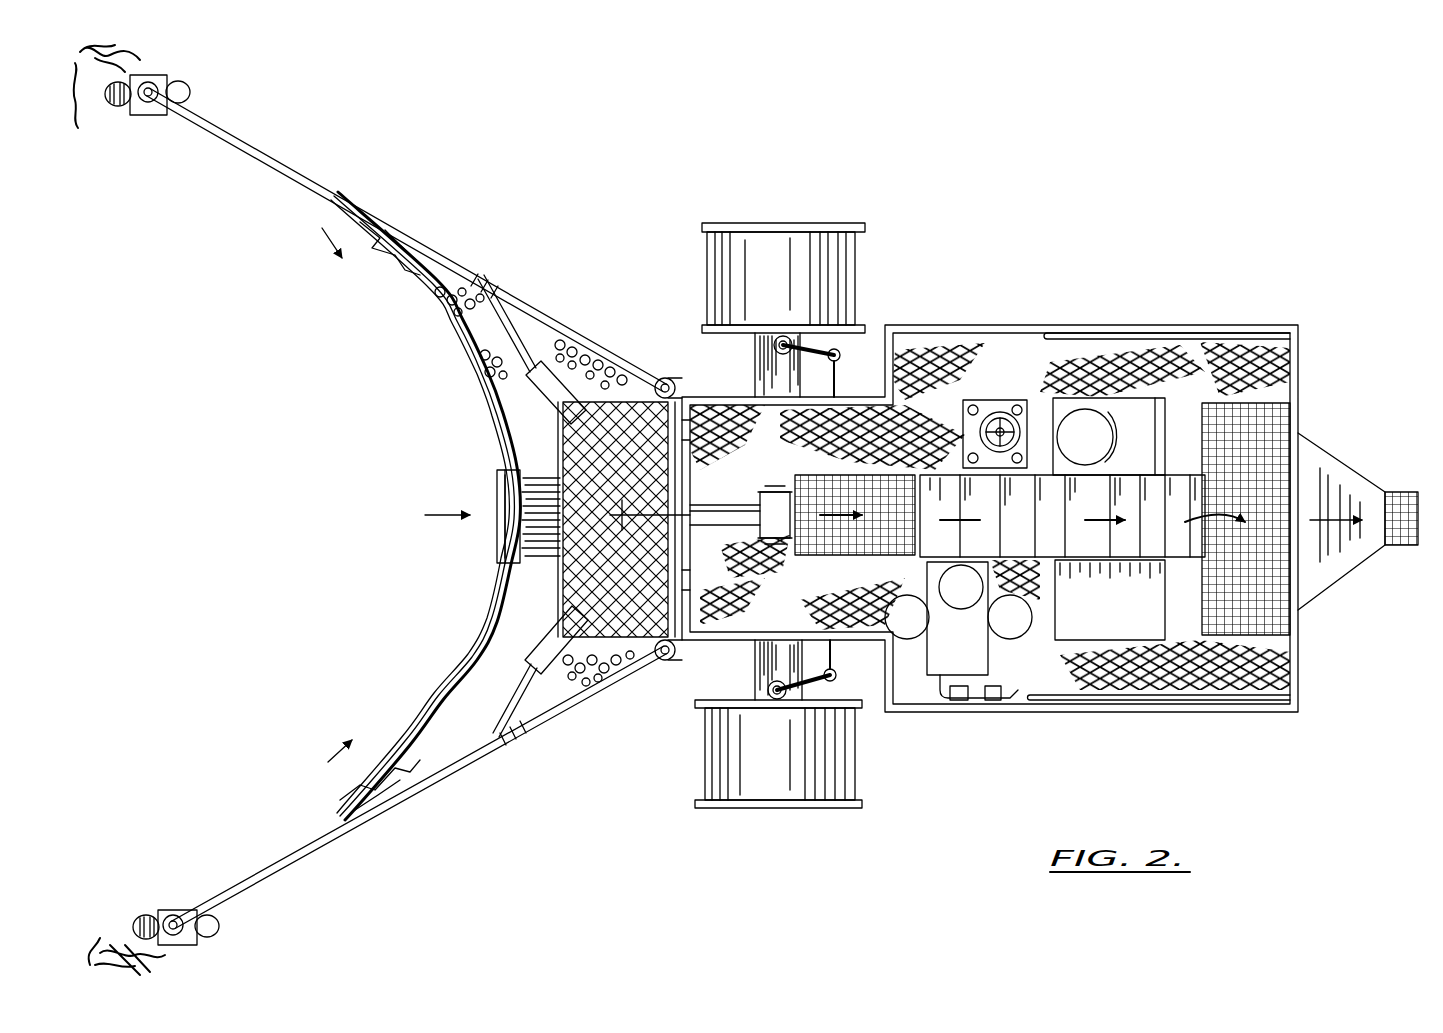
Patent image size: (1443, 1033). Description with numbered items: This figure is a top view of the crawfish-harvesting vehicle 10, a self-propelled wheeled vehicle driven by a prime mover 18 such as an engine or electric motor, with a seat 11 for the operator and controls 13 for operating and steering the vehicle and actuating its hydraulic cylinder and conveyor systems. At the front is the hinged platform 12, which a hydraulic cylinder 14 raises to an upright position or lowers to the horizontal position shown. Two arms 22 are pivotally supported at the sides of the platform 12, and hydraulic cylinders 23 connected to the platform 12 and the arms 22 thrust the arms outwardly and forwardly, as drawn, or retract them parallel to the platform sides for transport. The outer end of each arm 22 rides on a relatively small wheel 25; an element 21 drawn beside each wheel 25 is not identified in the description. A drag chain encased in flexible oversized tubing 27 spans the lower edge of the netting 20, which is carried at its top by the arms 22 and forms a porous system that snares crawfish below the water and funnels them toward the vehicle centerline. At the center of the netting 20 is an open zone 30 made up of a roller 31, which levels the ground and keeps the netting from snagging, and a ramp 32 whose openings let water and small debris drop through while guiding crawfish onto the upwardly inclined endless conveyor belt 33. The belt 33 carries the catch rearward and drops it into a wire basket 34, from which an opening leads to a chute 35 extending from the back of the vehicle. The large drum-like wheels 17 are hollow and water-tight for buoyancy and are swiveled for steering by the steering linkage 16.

The vehicle 10 is at (1128, 255).
The seat 11 is at (1097, 449).
The hinged platform 12 is at (560, 600).
The controls 13 is at (998, 400).
The hydraulic cylinder 14 is at (735, 505).
The steering linkage 16 is at (842, 378).
The wheels 17 is at (745, 275).
The prime mover 18 is at (972, 656).
The netting 20 is at (437, 308).
The debris pile 21 is at (85, 72).
The arms 22 is at (460, 270).
The hydraulic cylinders 23 is at (548, 403).
The wheel 25 is at (190, 92).
The flexible oversized tubing 27 is at (483, 380).
The open zone 30 is at (485, 482).
The roller 31 is at (505, 547).
The ramp 32 is at (550, 478).
The conveyor belt 33 is at (945, 490).
The wire basket 34 is at (1262, 455).
The chute 35 is at (1322, 578).